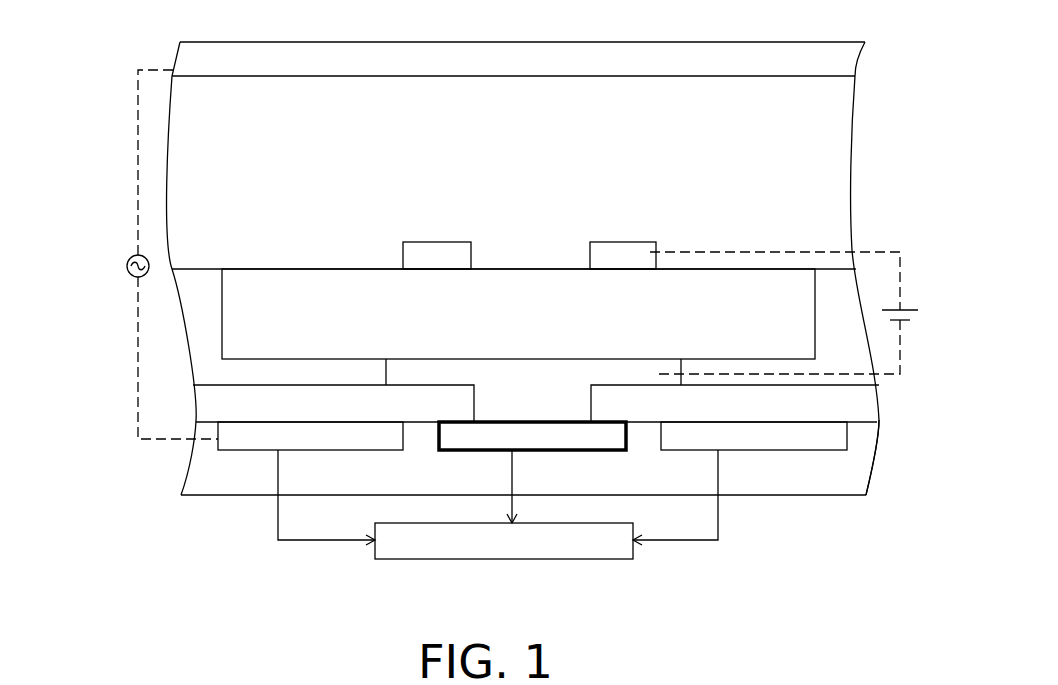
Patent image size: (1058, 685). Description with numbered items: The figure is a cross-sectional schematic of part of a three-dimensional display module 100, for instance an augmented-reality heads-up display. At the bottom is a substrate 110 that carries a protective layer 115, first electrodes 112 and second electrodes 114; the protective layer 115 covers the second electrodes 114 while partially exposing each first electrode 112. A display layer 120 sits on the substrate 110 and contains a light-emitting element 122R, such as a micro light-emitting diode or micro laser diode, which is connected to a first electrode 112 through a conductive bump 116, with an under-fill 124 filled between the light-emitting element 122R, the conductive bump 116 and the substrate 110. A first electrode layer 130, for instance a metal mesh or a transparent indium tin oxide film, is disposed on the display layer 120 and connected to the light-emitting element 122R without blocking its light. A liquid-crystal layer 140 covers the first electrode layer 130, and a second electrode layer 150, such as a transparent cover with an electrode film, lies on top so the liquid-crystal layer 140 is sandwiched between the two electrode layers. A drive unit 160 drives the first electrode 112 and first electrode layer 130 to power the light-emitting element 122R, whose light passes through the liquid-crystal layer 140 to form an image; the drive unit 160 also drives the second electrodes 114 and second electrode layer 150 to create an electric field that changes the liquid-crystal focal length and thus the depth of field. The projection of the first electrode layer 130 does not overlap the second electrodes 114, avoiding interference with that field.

The three-dimensional display module 100 is at (919, 27).
The substrate 110 is at (196, 476).
The first electrode 112 is at (580, 438).
The second electrode 114 is at (247, 434).
The protective layer 115 is at (858, 404).
The conductive bump 116 is at (494, 400).
The display layer 120 is at (174, 344).
The light-emitting element 122R is at (238, 293).
The under-fill 124 is at (205, 365).
The first electrode layer 130 is at (396, 240).
The liquid-crystal layer 140 is at (183, 132).
The second electrode layer 150 is at (182, 58).
The drive unit 160 is at (507, 548).